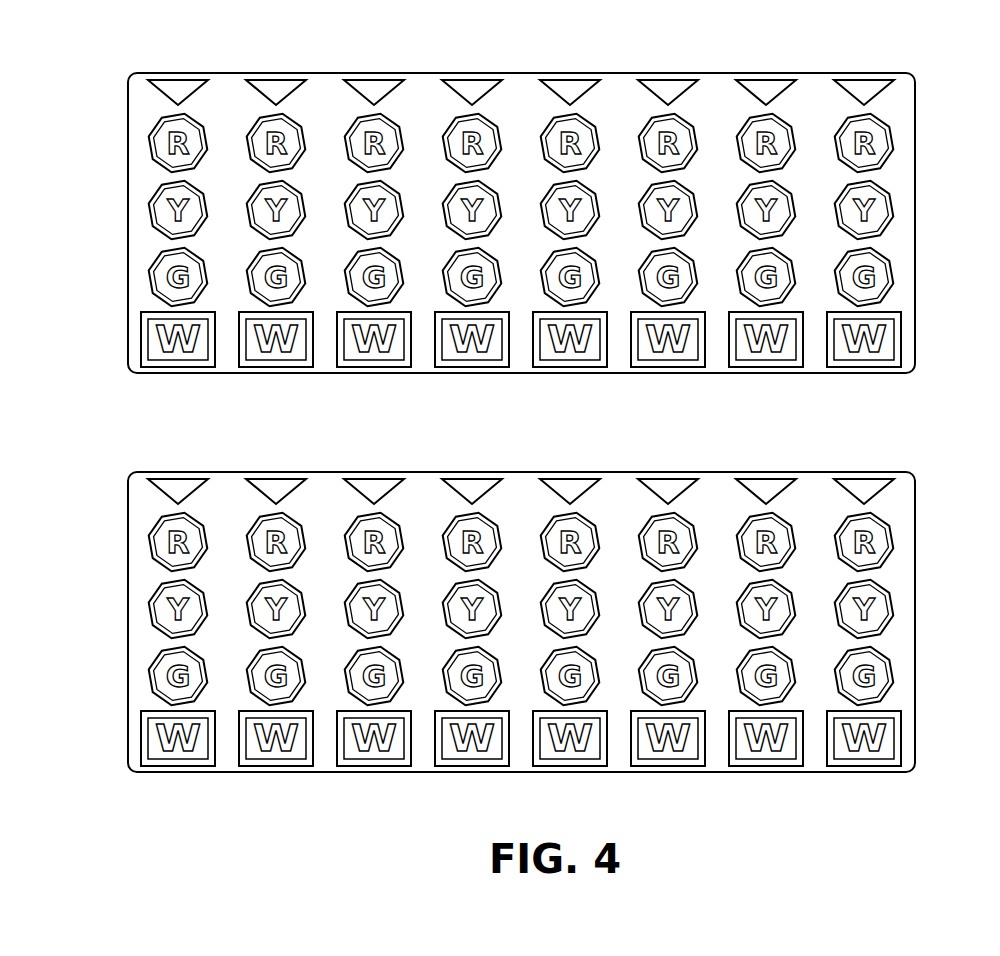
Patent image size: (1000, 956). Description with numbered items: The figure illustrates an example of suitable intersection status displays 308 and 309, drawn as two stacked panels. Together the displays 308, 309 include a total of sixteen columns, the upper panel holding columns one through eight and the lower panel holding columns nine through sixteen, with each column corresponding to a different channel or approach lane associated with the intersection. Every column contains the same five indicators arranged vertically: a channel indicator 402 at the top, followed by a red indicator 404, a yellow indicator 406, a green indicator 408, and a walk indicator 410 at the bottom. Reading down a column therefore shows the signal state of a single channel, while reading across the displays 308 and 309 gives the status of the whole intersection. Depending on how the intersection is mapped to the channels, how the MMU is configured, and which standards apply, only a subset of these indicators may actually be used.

The intersection status display 308 is at (96, 168).
The intersection status display 309 is at (96, 568).
The channel indicator 402 is at (880, 88).
The red indicator 404 is at (880, 140).
The yellow indicator 406 is at (880, 207).
The green indicator 408 is at (880, 263).
The walk indicator 410 is at (880, 323).